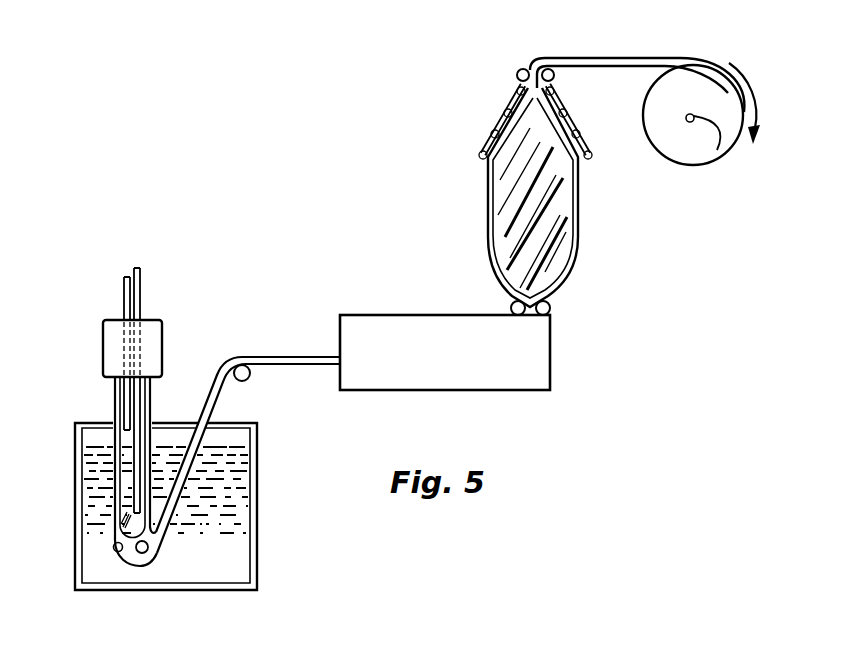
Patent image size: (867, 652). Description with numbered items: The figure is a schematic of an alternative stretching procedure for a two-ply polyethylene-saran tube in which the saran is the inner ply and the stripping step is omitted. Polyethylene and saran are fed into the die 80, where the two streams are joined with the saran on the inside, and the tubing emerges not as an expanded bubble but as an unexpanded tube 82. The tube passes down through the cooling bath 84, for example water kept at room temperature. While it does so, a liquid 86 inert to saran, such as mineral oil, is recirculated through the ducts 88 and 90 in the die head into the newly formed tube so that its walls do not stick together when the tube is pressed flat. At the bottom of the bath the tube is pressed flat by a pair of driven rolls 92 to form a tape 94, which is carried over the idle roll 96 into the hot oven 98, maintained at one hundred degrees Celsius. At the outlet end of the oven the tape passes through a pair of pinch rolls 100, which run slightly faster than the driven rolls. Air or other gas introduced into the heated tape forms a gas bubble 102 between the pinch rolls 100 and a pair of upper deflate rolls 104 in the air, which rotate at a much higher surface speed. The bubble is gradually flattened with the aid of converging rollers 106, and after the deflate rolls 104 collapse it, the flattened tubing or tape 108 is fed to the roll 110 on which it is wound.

The die 80 is at (162, 335).
The unexpanded tube 82 is at (113, 397).
The cooling bath 84 is at (87, 566).
The liquid 86 is at (122, 486).
The duct 88 is at (141, 272).
The duct 90 is at (124, 280).
The driven rolls 92 is at (119, 552).
The tape 94 is at (212, 391).
The idle roll 96 is at (249, 380).
The hot oven 98 is at (379, 297).
The pinch rolls 100 is at (552, 304).
The gas bubble 102 is at (579, 219).
The upper deflate rolls 104 is at (517, 77).
The converging rollers 106 is at (483, 162).
The flattened tubing or tape 108 is at (658, 58).
The roll 110 is at (710, 160).